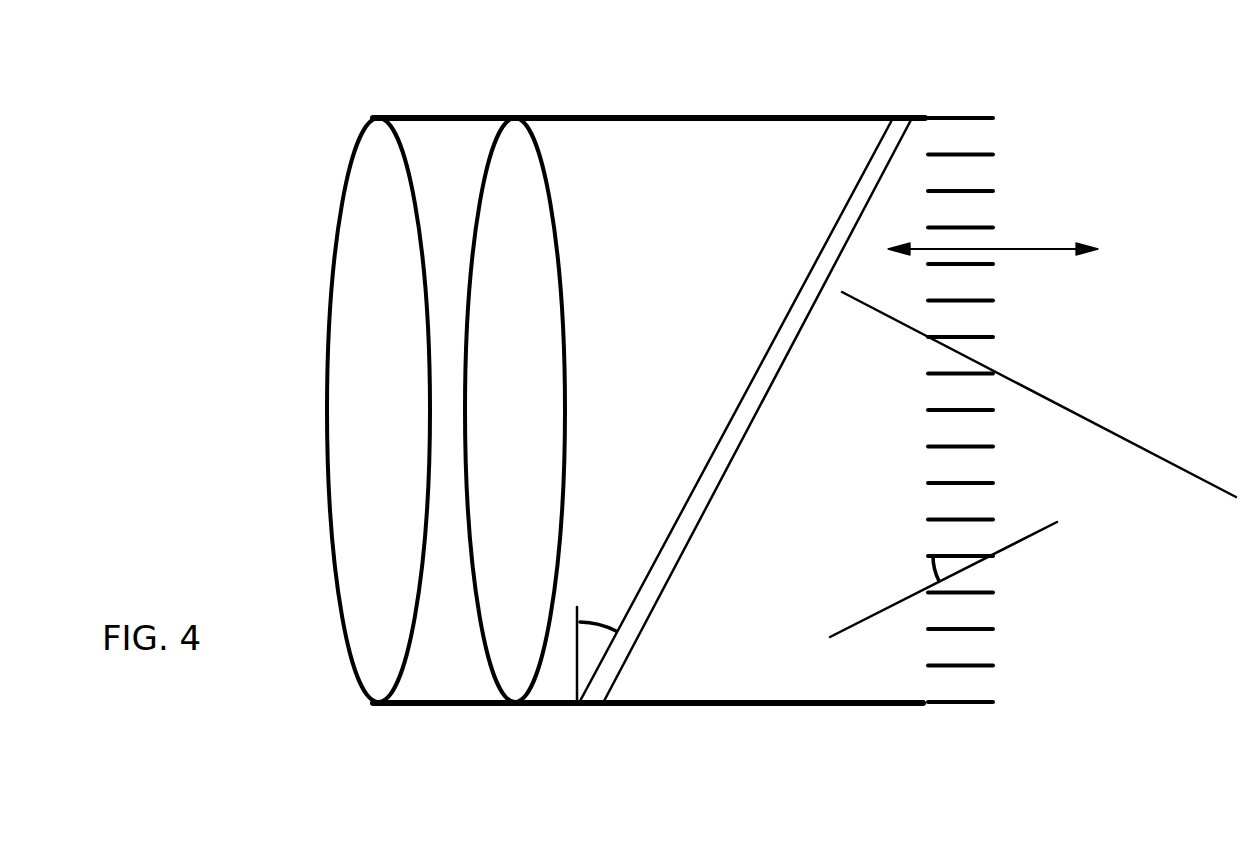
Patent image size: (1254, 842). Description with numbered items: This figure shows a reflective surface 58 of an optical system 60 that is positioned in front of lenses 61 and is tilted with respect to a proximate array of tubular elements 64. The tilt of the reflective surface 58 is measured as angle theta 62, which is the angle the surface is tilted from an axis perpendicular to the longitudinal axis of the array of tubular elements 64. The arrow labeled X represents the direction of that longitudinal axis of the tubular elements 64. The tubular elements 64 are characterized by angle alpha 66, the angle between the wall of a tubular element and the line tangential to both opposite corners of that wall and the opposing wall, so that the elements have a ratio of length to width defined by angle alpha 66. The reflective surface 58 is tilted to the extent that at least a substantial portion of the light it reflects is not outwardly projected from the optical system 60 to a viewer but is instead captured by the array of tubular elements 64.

The reflective surface 58 is at (866, 167).
The optical system 60 is at (612, 100).
The lenses 61 is at (371, 683).
The angle theta 62 is at (592, 620).
The array of tubular elements 64 is at (985, 193).
The angle alpha 66 is at (933, 556).
The direction of the longitudinal axis of tubular elements X is at (1043, 257).